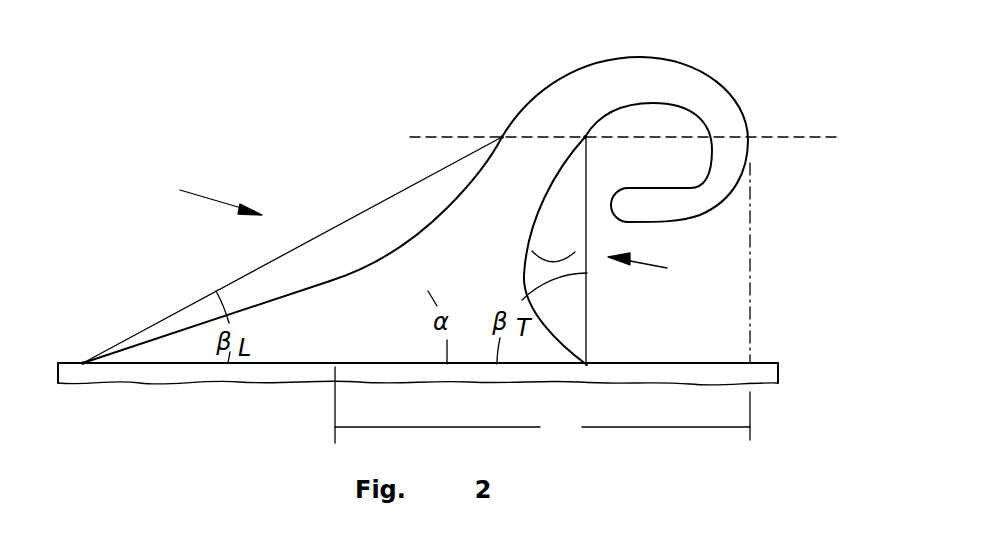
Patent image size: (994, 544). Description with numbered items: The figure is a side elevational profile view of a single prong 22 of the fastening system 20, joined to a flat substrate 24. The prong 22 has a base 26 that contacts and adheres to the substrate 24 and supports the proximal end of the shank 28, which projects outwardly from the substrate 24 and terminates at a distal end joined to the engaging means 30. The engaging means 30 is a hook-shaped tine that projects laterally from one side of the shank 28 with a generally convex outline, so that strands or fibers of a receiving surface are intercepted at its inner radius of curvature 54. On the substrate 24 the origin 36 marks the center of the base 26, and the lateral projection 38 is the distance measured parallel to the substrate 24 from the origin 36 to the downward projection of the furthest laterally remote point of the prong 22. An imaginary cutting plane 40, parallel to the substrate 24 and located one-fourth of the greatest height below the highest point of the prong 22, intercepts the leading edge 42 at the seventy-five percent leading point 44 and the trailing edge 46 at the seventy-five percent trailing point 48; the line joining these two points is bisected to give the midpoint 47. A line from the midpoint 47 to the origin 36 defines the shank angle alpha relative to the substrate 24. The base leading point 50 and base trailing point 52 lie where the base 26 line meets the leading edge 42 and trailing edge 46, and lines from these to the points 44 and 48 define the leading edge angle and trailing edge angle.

The fastening system 20 is at (203, 195).
The prong 22 is at (654, 269).
The substrate 24 is at (140, 377).
The base 26 is at (208, 364).
The shank 28 is at (478, 262).
The engaging means 30 is at (727, 105).
The origin 36 is at (340, 364).
The lateral projection 38 is at (542, 303).
The imaginary cutting plane 40 is at (627, 138).
The leading edge 42 is at (447, 205).
The 75% leading point 44 is at (500, 136).
The trailing edge 46 is at (555, 251).
The midpoint 47 is at (547, 138).
The 75% trailing point 48 is at (587, 139).
The base leading point 50 is at (82, 362).
The base trailing point 52 is at (590, 363).
The inner radius of curvature 54 is at (660, 104).